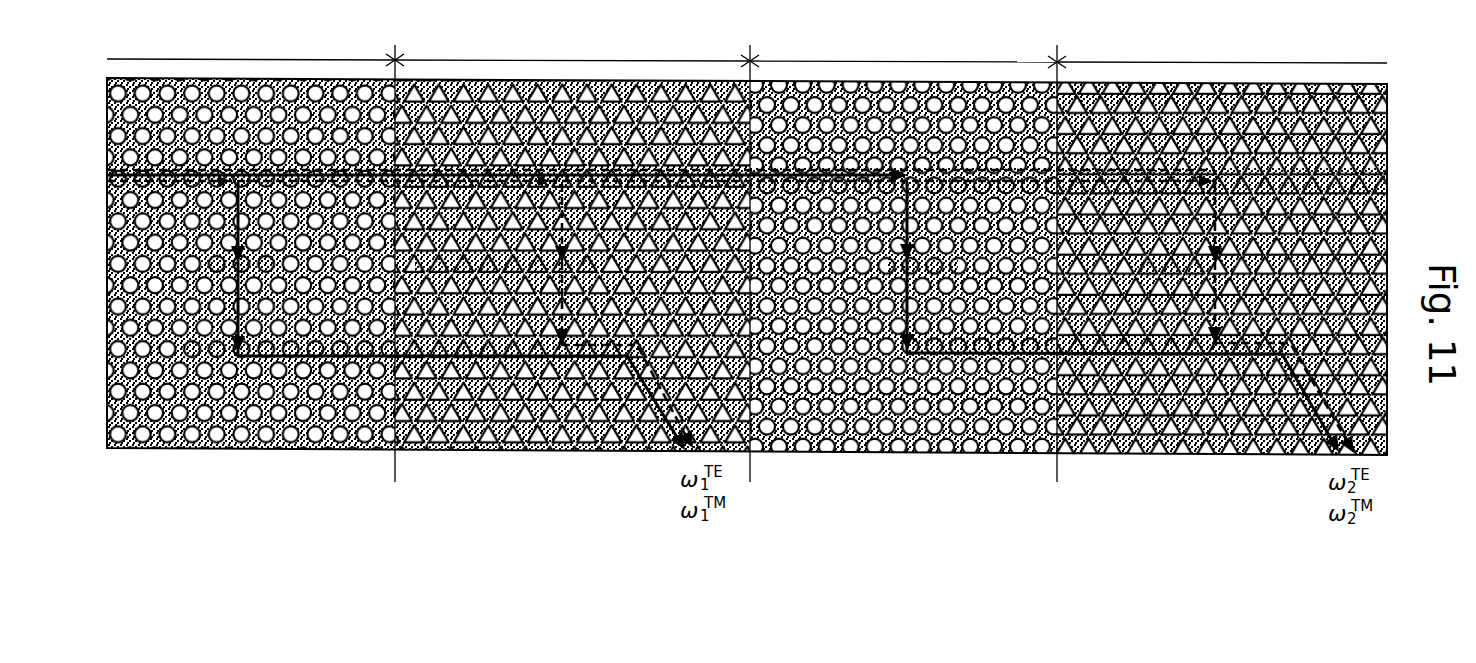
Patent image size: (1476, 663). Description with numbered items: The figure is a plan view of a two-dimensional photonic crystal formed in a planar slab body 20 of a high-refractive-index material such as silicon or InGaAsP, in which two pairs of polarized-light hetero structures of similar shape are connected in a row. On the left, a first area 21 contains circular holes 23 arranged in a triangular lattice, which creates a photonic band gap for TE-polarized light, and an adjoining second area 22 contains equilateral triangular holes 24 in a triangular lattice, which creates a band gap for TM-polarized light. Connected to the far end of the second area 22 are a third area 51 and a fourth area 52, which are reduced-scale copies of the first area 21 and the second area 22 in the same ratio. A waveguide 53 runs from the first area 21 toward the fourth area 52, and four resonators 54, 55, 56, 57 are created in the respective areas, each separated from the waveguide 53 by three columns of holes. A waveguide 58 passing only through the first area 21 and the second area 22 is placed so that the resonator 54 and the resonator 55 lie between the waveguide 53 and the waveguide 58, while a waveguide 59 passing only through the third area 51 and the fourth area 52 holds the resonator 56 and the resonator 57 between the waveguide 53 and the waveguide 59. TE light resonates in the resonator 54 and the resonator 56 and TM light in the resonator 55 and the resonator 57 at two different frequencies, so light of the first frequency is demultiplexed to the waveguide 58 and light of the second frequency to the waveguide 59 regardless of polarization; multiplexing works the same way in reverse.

The body 20 is at (771, 280).
The first area 21 is at (255, 258).
The second area 22 is at (577, 258).
The circular holes 23 is at (183, 448).
The equilateral triangular holes 24 is at (488, 437).
The third area 51 is at (908, 258).
The fourth area 52 is at (1222, 48).
The waveguide 53 is at (1347, 187).
The resonator 54 is at (255, 260).
The resonator 55 is at (573, 263).
The resonator 56 is at (922, 263).
The resonator 57 is at (1252, 345).
The waveguide 58 is at (433, 423).
The waveguide 59 is at (1027, 340).